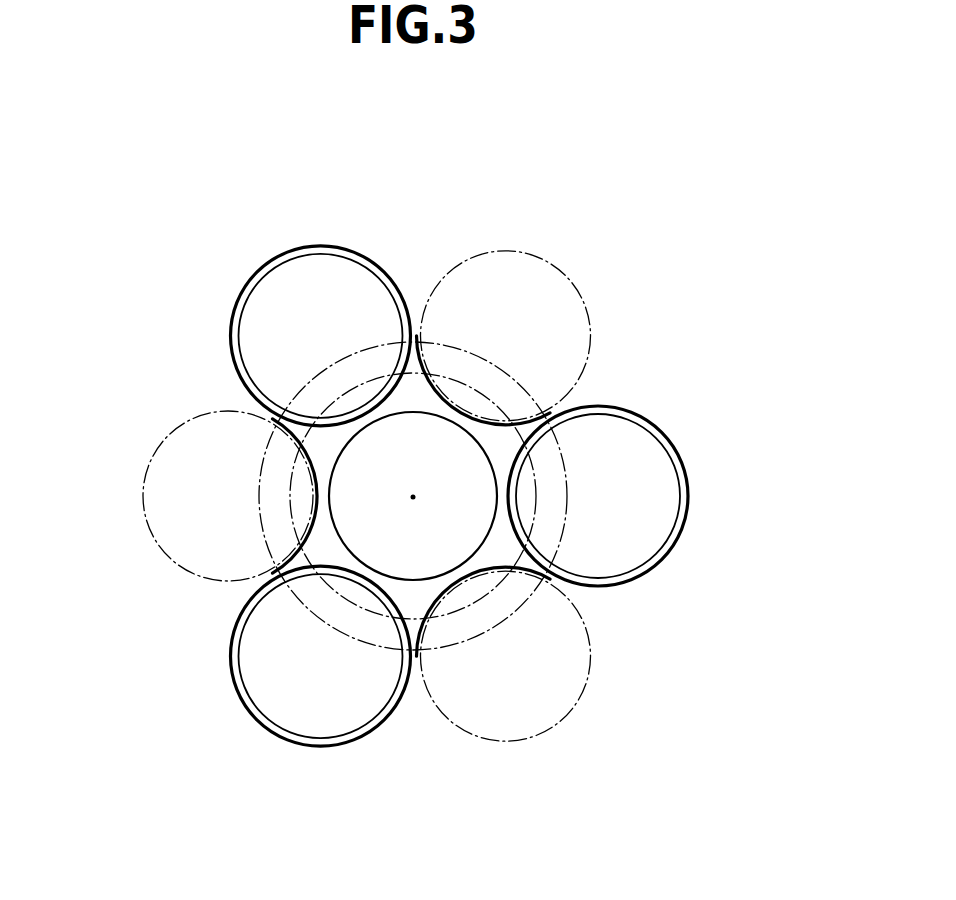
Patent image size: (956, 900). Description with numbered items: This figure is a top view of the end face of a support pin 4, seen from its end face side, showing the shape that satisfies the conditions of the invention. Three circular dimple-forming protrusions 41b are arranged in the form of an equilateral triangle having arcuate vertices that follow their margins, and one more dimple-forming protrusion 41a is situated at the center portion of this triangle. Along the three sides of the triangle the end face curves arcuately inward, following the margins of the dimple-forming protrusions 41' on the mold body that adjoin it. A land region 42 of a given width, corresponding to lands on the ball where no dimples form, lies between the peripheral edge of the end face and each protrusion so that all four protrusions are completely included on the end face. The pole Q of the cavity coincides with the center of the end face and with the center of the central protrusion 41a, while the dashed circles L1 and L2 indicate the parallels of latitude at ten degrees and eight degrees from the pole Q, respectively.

The support pin 4 is at (192, 359).
The dimple-forming protrusion 41a is at (450, 455).
The dimple-forming protrusions 41b is at (288, 307).
The dimple-forming protrusions 41' is at (352, 497).
The land region 42 is at (410, 392).
The pole Q is at (411, 496).
The circle L1 is at (568, 523).
The circle L2 is at (533, 533).